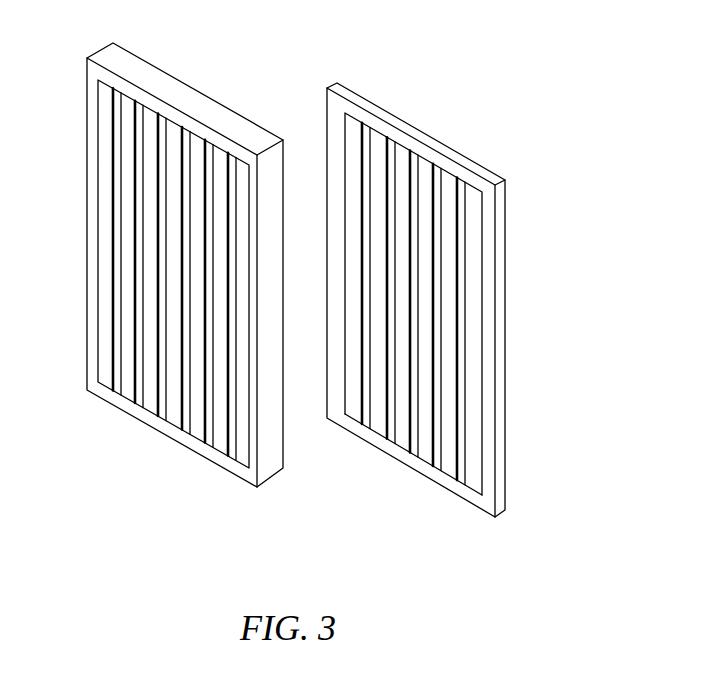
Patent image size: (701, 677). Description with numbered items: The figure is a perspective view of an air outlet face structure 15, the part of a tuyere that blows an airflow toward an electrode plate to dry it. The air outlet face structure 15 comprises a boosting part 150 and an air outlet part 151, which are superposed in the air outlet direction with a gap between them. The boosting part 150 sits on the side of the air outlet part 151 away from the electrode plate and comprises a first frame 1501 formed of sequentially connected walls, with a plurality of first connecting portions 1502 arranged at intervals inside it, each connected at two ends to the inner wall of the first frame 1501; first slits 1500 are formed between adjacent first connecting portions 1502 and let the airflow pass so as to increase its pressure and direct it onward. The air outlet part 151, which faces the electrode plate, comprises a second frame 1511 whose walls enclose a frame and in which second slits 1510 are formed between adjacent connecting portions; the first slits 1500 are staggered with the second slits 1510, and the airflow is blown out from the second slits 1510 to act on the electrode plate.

The air outlet face structure 15 is at (298, 24).
The air outlet part 151 is at (84, 187).
The second frame 1511 is at (87, 277).
The second slits 1510 is at (138, 405).
The boosting part 150 is at (507, 280).
The first frame 1501 is at (495, 490).
The first slits 1500 is at (459, 483).
The first connecting portions 1502 is at (447, 462).